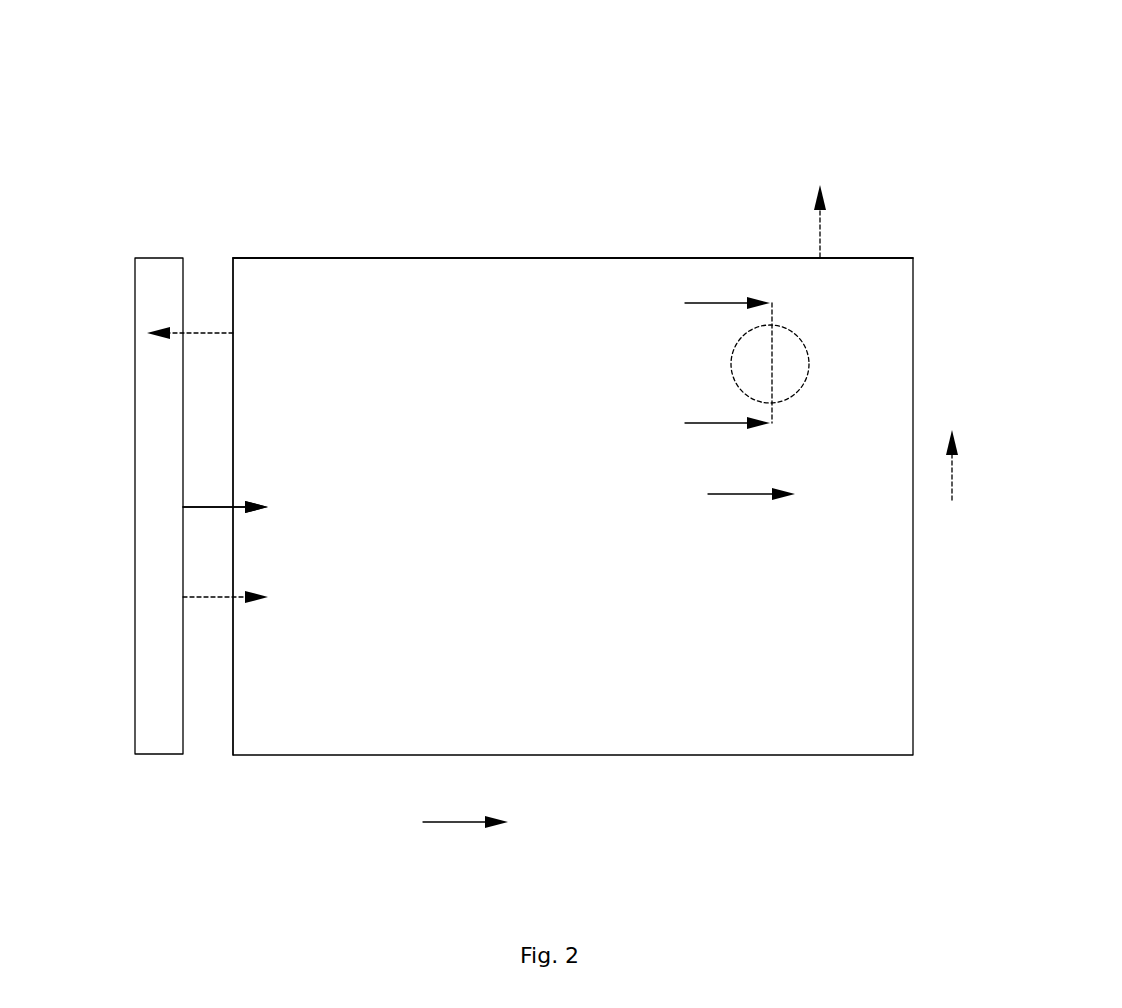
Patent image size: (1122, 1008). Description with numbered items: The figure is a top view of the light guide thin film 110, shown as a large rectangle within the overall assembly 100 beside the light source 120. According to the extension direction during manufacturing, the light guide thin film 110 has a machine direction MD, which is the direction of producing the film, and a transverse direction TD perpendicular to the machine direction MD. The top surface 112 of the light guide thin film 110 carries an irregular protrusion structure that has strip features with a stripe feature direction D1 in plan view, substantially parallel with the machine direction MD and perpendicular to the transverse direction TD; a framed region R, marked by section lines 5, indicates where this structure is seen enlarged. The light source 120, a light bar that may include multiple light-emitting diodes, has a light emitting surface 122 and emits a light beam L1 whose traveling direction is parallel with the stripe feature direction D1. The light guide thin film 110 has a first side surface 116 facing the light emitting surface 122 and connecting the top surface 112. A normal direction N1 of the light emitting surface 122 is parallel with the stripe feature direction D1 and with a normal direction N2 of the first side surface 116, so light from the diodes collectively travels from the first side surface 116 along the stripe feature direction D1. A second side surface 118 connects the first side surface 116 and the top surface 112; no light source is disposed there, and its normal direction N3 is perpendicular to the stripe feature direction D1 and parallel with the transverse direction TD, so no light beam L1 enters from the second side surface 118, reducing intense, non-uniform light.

The sheet forming apparatus 100 is at (1112, 84).
The light guide thin film 110 is at (652, 257).
The top surface 112 is at (530, 272).
The first side surface 116 is at (235, 713).
The second side surface 118 is at (395, 257).
The light source 120 is at (157, 430).
The light emitting surface 122 is at (183, 503).
The section line 5 is at (716, 363).
The framed region R is at (803, 341).
The normal direction of the light emitting surface N1 is at (197, 597).
The normal direction of the first side surface N2 is at (197, 333).
The normal direction of the second side surface N3 is at (819, 207).
The light beam L1 is at (197, 505).
The transverse direction TD is at (969, 465).
The stripe feature direction D1 is at (751, 508).
The machine direction MD is at (465, 836).